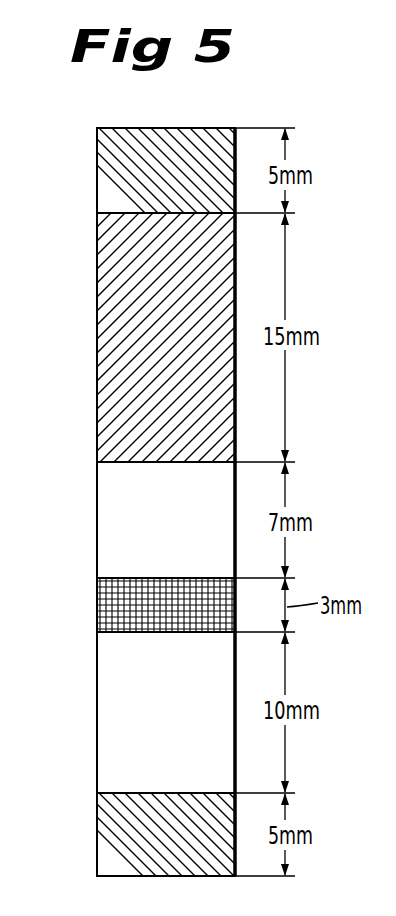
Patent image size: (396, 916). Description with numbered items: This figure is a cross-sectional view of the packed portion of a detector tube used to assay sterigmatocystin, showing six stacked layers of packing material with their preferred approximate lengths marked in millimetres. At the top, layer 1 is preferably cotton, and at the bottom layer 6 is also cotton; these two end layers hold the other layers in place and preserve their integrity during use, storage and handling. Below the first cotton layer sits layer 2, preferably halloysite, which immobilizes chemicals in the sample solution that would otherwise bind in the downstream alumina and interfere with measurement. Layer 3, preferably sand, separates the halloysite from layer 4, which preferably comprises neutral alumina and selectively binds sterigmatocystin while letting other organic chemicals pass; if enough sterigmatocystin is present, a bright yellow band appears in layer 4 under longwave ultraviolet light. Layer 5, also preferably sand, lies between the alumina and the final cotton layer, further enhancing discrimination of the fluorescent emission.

The cotton layer 1 is at (95, 176).
The halloysite layer 2 is at (95, 343).
The sand layer 3 is at (95, 515).
The neutral alumina layer 4 is at (95, 603).
The sand layer 5 is at (95, 723).
The cotton layer 6 is at (95, 838).